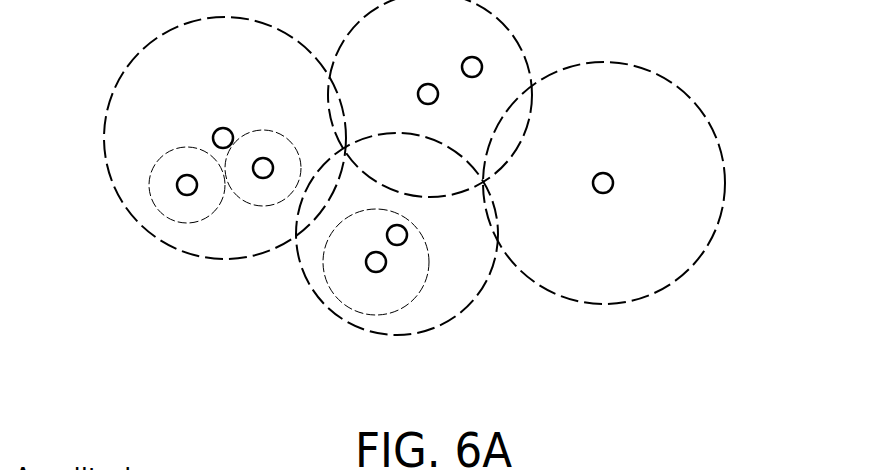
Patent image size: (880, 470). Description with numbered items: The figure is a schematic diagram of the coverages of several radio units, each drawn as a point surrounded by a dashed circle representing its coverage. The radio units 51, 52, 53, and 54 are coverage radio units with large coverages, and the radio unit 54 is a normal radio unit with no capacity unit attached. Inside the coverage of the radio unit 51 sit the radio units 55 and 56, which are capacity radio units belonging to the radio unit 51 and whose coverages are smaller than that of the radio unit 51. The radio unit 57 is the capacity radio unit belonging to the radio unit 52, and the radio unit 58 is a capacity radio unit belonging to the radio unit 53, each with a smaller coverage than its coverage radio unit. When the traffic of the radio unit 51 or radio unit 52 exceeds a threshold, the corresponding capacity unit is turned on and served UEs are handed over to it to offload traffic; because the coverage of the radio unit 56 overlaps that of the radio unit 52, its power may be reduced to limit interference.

The radio unit 51 is at (218, 128).
The radio unit 52 is at (408, 238).
The radio unit 53 is at (422, 83).
The radio unit 54 is at (597, 172).
The radio unit 55 is at (183, 195).
The radio unit 56 is at (264, 179).
The radio unit 57 is at (386, 273).
The radio unit 58 is at (480, 57).